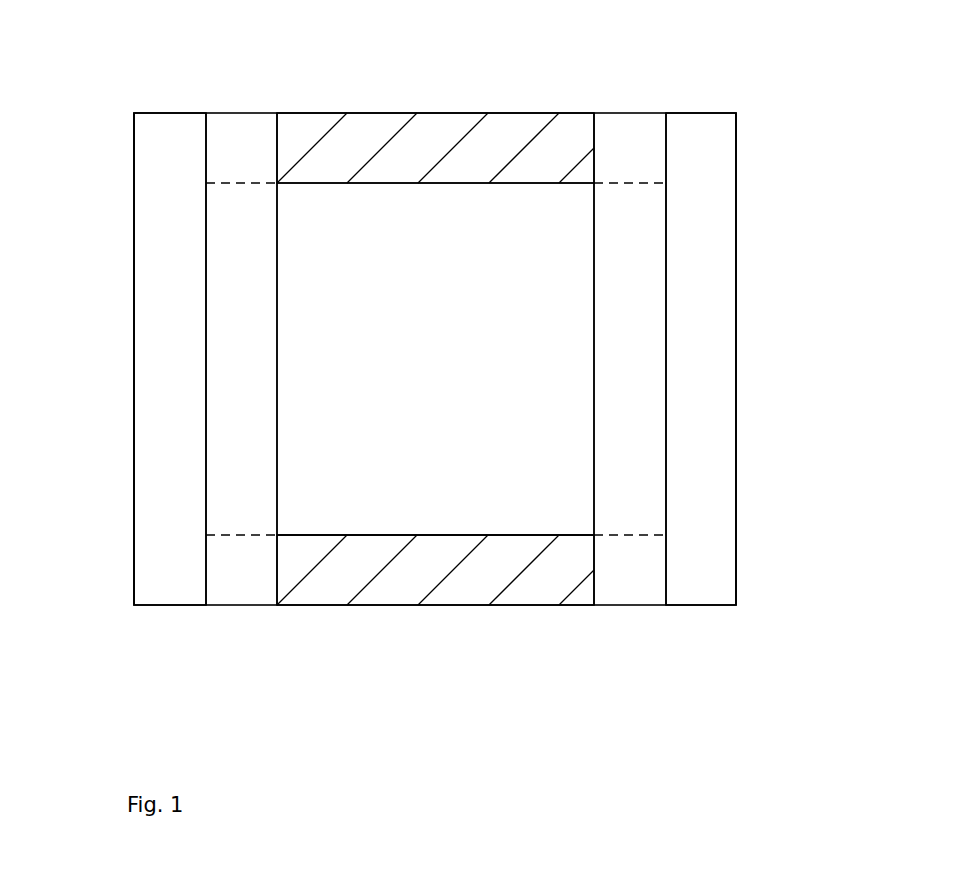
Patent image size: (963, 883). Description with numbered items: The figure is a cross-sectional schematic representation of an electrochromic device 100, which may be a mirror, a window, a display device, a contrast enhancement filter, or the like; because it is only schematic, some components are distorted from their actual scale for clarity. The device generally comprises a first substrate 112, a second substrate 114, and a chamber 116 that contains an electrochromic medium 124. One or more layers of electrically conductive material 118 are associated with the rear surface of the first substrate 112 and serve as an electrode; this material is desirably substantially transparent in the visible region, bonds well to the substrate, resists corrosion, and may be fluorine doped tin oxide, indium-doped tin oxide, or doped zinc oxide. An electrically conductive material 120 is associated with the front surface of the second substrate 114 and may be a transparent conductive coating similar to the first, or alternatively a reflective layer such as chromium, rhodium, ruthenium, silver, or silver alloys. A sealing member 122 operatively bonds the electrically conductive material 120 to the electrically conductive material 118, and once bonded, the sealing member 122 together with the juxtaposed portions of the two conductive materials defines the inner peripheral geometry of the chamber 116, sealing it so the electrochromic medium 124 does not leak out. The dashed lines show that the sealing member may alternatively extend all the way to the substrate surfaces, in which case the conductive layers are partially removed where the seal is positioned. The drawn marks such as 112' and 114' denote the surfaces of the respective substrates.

The electrochromic device 100 is at (478, 69).
The first substrate 112 is at (701, 411).
The lower portion of second electrode 112' is at (789, 482).
The second substrate 114 is at (170, 411).
The upper portion of first electrode 114' is at (116, 236).
The chamber 116 is at (452, 379).
The electrically conductive material 118 is at (628, 503).
The electrically conductive material 120 is at (240, 500).
The sealing member 122 is at (312, 128).
The electrochromic medium 124 is at (487, 468).